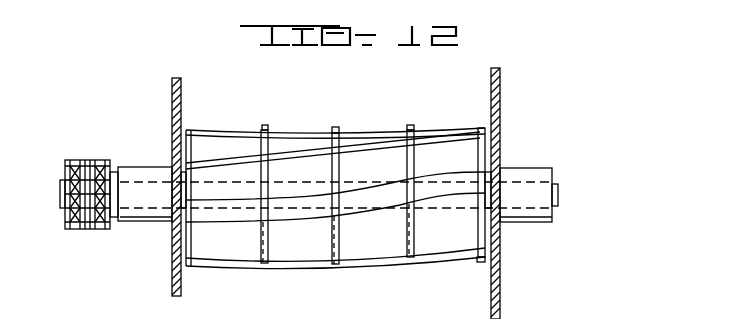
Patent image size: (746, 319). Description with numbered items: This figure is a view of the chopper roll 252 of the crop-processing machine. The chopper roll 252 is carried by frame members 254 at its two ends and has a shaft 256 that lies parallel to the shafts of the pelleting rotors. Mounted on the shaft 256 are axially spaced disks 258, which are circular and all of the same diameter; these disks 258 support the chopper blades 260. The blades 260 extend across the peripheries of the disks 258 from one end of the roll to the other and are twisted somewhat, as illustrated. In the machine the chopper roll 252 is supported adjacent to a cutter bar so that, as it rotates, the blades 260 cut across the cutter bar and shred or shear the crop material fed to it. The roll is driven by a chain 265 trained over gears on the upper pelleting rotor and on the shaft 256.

The chopper roll 252 is at (335, 199).
The frame members 254 is at (173, 97).
The shaft 256 is at (227, 195).
The disks 258 is at (266, 251).
The chopper blades 260 is at (247, 130).
The chain 265 is at (82, 232).